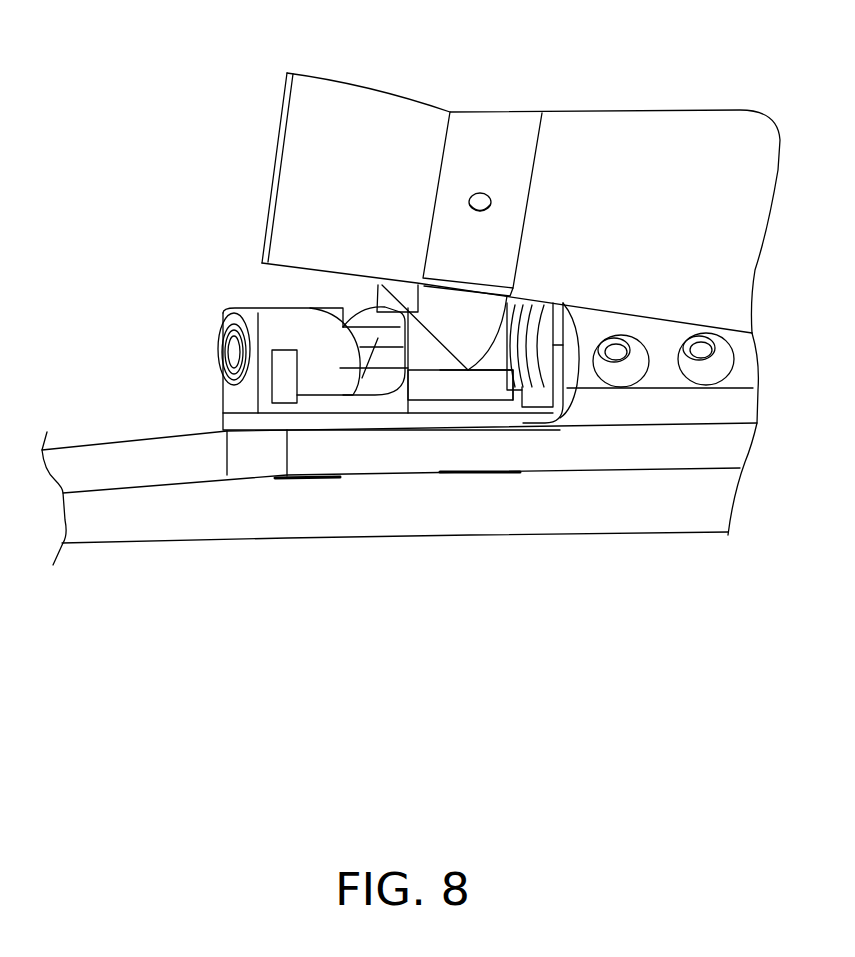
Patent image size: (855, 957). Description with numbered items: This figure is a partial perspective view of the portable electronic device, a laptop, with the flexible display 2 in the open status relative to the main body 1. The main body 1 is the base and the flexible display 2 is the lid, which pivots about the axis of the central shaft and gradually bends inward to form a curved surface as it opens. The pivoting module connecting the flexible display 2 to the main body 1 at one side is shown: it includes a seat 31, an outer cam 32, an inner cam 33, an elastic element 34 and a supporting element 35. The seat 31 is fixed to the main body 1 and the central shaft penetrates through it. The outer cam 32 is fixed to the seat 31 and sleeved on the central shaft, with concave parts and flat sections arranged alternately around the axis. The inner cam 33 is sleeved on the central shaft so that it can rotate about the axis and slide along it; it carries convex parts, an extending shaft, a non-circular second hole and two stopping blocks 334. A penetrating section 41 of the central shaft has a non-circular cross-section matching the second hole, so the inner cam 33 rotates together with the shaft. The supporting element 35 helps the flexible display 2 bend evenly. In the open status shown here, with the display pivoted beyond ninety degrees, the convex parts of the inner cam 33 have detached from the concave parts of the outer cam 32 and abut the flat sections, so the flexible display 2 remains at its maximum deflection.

The main body 1 is at (98, 477).
The flexible display 2 is at (370, 117).
The seat 31 is at (230, 398).
The outer cam 32 is at (282, 317).
The inner cam 33 is at (422, 372).
The stopping block 334 is at (470, 372).
The elastic element 34 is at (523, 380).
The supporting element 35 is at (492, 137).
The penetrating section 41 is at (366, 372).